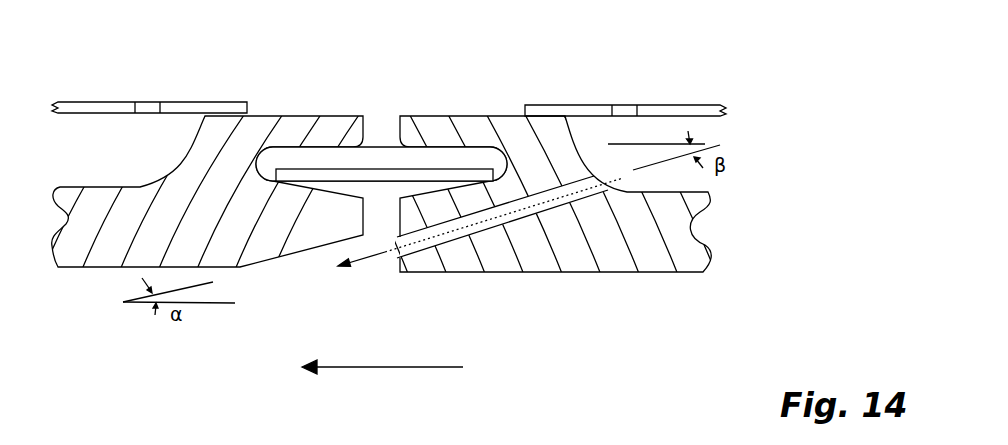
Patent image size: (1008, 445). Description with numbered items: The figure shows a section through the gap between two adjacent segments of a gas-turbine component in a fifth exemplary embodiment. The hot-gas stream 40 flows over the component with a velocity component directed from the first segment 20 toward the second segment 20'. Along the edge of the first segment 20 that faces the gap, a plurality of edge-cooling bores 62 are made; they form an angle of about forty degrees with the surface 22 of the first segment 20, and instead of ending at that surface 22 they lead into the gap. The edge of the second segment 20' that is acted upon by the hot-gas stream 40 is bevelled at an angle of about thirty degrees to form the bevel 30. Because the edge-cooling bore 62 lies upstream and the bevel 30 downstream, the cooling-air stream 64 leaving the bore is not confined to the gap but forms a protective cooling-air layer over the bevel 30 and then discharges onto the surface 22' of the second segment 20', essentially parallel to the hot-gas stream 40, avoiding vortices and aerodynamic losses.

The first segment 20 is at (638, 171).
The second segment 20' is at (148, 147).
The surface 22 is at (555, 216).
The surface 22' is at (207, 227).
The bevel 30 is at (293, 260).
The hot-gas stream 40 is at (382, 385).
The edge-cooling bores 62 is at (508, 218).
The cooling-air stream 64 is at (480, 232).